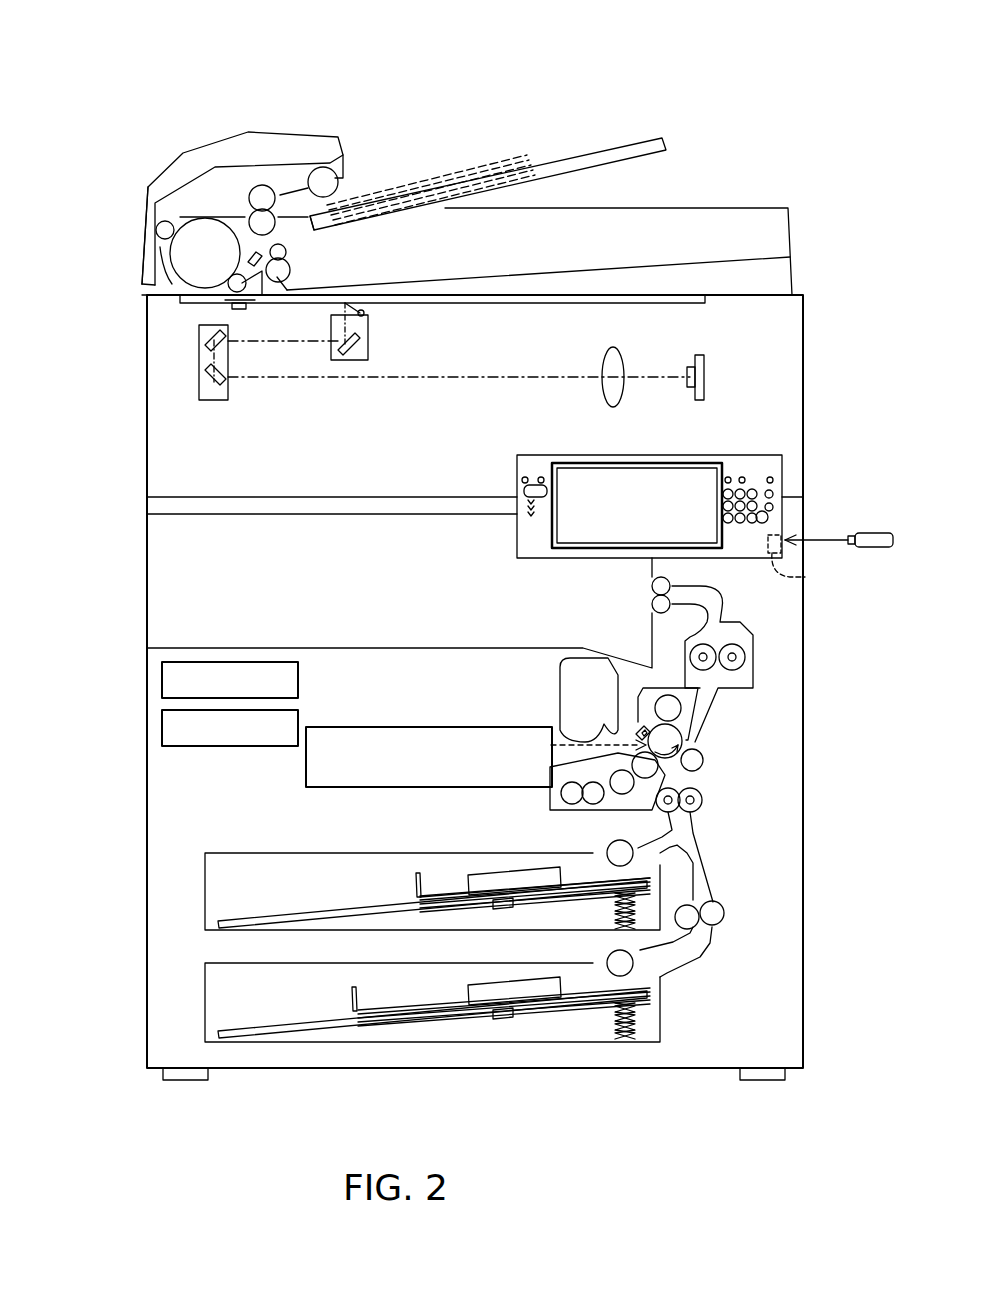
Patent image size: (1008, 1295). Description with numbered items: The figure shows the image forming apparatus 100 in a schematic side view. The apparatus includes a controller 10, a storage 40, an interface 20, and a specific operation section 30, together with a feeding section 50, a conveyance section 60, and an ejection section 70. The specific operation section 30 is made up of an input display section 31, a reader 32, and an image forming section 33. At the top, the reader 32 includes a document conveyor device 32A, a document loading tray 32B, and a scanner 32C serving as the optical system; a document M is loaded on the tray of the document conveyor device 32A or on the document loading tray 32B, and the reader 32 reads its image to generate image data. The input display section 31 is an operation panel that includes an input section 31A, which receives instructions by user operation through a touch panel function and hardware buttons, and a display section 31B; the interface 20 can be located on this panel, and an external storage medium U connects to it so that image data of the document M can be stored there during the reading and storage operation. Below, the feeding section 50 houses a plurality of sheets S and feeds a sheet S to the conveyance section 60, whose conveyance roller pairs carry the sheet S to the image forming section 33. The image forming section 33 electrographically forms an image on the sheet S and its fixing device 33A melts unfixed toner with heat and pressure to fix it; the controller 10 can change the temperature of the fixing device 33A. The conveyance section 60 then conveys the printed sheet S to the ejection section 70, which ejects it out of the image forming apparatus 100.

The image forming apparatus 100 is at (755, 120).
The specific operation section 30 is at (462, 581).
The reader 32 is at (90, 279).
The document conveyor device 32A is at (148, 212).
The document loading tray 32B is at (683, 297).
The scanner 32C is at (147, 378).
The document M is at (441, 178).
The input display section 31 is at (481, 449).
The input section 31A is at (541, 455).
The display section 31B is at (635, 463).
The interface 20 is at (816, 565).
The external storage medium U is at (887, 533).
The image forming section 33 is at (504, 814).
The fixing device 33A is at (755, 667).
The ejection section 70 is at (650, 596).
The controller 10 is at (298, 686).
The storage 40 is at (298, 722).
The feeding section 50 is at (381, 940).
The sheet S is at (420, 872).
The conveyance section 60 is at (690, 978).